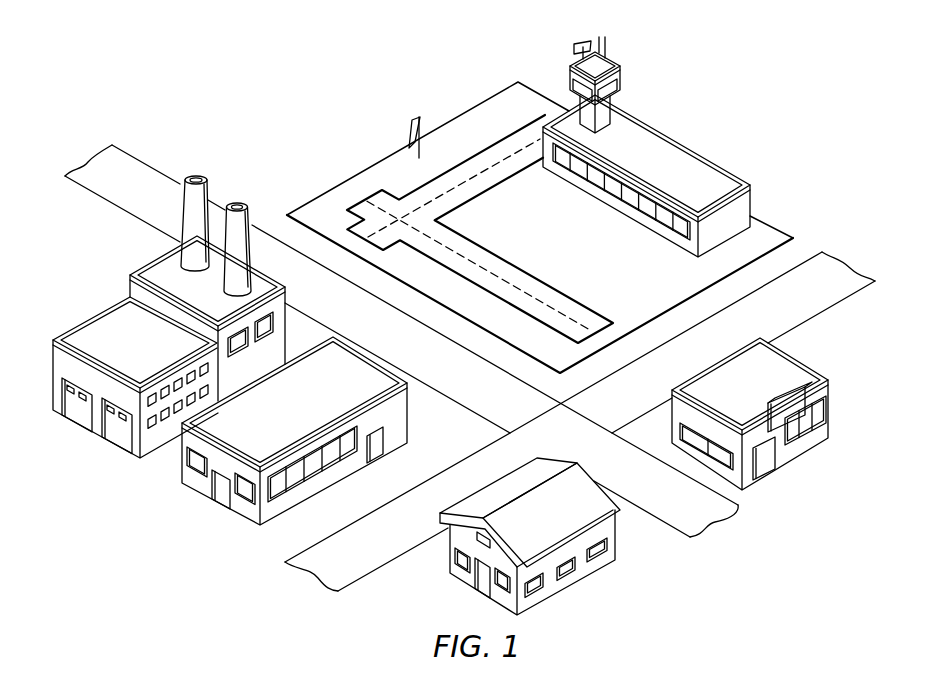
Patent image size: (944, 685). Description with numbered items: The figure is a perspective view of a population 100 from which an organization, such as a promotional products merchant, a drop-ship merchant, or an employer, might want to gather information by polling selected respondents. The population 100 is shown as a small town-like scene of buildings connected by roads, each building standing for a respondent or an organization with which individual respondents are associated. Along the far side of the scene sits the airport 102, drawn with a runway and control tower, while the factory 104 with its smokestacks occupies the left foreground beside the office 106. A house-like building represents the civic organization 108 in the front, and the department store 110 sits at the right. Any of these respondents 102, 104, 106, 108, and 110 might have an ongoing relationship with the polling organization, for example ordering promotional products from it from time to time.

The population 100 is at (252, 63).
The airport 102 is at (681, 147).
The factory 104 is at (108, 305).
The office 106 is at (198, 492).
The civic organization 108 is at (563, 588).
The department store 110 is at (803, 453).